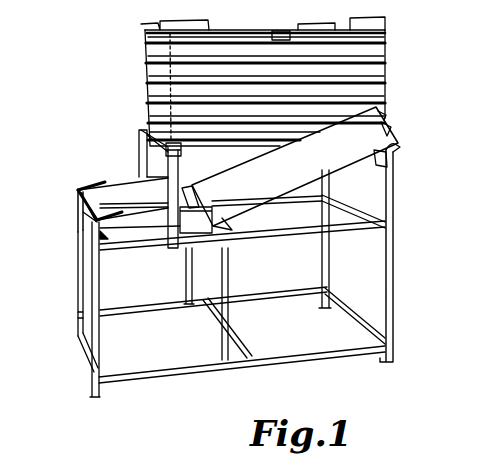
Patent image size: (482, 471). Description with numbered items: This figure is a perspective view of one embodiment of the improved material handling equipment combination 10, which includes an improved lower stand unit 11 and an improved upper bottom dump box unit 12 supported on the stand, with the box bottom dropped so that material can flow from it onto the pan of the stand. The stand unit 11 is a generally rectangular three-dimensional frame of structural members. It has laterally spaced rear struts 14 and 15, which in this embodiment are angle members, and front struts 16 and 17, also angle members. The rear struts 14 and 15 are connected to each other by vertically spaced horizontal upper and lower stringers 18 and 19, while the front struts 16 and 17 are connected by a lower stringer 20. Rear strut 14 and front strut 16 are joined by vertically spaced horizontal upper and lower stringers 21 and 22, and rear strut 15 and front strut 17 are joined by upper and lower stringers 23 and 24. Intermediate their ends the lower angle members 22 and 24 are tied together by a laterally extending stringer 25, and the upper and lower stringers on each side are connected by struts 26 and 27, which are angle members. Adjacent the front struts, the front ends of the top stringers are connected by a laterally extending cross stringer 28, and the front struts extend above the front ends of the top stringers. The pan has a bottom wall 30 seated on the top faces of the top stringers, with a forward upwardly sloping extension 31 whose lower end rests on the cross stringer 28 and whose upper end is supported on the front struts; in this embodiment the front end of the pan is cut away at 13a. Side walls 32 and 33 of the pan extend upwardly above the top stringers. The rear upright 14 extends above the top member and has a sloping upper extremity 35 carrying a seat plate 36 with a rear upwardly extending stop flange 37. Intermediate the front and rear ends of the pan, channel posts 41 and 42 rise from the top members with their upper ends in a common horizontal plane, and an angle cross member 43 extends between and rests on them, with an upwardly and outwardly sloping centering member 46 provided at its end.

The material handling equipment combination 10 is at (394, 304).
The lower stand unit 11 is at (394, 251).
The upper bottom dump box unit 12 is at (386, 89).
The cut away front end of pan 13a is at (82, 215).
The rear strut 14 is at (394, 279).
The rear strut 15 is at (330, 182).
The front strut 16 is at (93, 368).
The front strut 17 is at (78, 282).
The upper stringer 18 is at (348, 212).
The lower stringer 19 is at (352, 308).
The lower stringer 20 is at (84, 345).
The upper stringer 21 is at (341, 231).
The lower stringer 22 is at (299, 350).
The upper stringer 23 is at (297, 200).
The lower stringer 24 is at (275, 294).
The laterally extending stringer 25 is at (237, 336).
The strut 26 is at (229, 274).
The strut 27 is at (186, 272).
The cross stringer 28 is at (99, 233).
The bottom wall 30 is at (80, 189).
The forward upwardly sloping extension 31 is at (84, 205).
The side wall 32 is at (125, 232).
The side wall 33 is at (112, 185).
The sloping upper extremity 35 is at (401, 159).
The seat plate 36 is at (389, 143).
The stop flange 37 is at (400, 142).
The post 41 is at (178, 192).
The post 42 is at (140, 150).
The angle cross member 43 is at (140, 132).
The centering member 46 is at (183, 152).